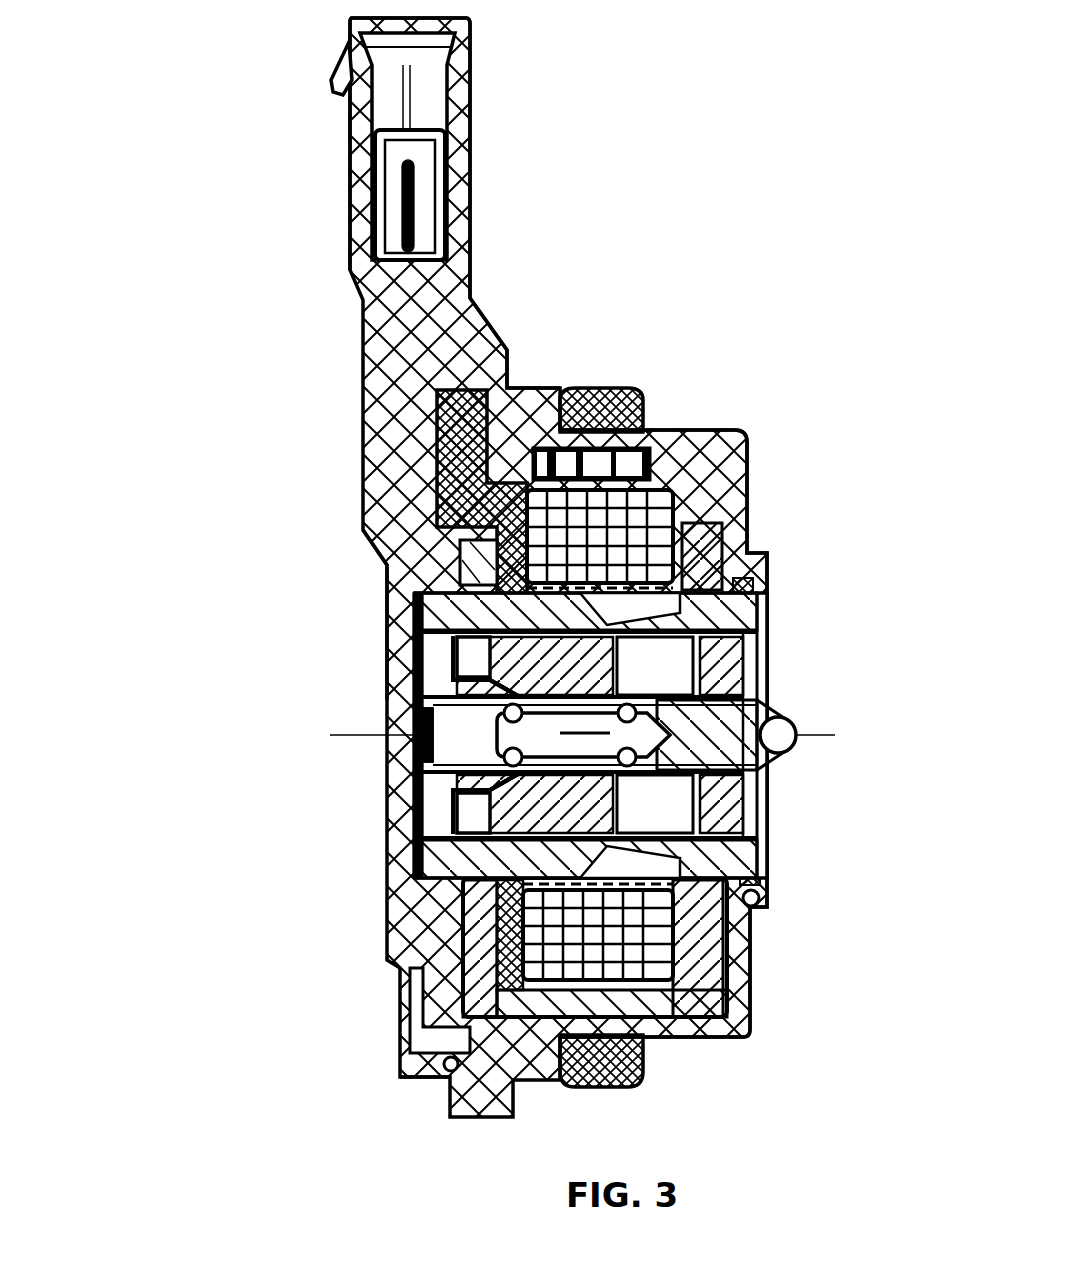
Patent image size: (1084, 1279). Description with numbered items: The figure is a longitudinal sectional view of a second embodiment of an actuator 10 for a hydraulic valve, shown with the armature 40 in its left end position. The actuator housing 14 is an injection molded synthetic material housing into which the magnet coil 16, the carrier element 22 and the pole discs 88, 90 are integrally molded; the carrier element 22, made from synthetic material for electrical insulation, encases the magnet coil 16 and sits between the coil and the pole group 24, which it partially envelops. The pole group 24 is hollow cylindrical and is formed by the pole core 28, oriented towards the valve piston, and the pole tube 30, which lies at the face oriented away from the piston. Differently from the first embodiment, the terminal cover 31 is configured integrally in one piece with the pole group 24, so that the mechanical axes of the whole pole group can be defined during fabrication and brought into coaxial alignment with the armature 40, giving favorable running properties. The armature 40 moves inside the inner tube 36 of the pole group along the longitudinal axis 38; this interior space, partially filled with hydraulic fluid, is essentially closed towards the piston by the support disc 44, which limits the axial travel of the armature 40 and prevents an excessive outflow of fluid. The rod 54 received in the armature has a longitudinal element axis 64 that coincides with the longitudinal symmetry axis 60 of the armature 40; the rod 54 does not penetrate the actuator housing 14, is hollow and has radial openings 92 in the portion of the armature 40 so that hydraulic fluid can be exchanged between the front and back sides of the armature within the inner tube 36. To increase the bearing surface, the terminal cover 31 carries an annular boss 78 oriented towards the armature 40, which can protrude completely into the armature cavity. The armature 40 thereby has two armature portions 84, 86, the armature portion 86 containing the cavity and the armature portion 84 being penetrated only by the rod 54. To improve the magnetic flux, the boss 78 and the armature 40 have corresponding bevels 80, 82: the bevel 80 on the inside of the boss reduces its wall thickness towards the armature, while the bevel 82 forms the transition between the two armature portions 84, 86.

The actuator 10 is at (686, 232).
The actuator housing 14 is at (737, 483).
The magnet coil 16 is at (718, 425).
The carrier element 22 is at (520, 350).
The pole group 24 is at (793, 603).
The pole core 28 is at (767, 893).
The pole tube 30 is at (387, 937).
The terminal cover 31 is at (383, 627).
The inner tube 36 is at (642, 819).
The longitudinal axis 38 is at (383, 737).
The armature 40 is at (620, 678).
The support disc 44 is at (767, 835).
The rod 54 is at (790, 712).
The longitudinal symmetry axis 60 is at (383, 737).
The longitudinal element axis 64 is at (383, 737).
The annular boss 78 is at (463, 777).
The bevel 80 is at (450, 790).
The bevel 82 is at (450, 790).
The armature portion 84 is at (748, 997).
The armature portion 86 is at (390, 885).
The pole disc 88 is at (730, 540).
The pole disc 90 is at (467, 577).
The radial openings 92 is at (766, 800).